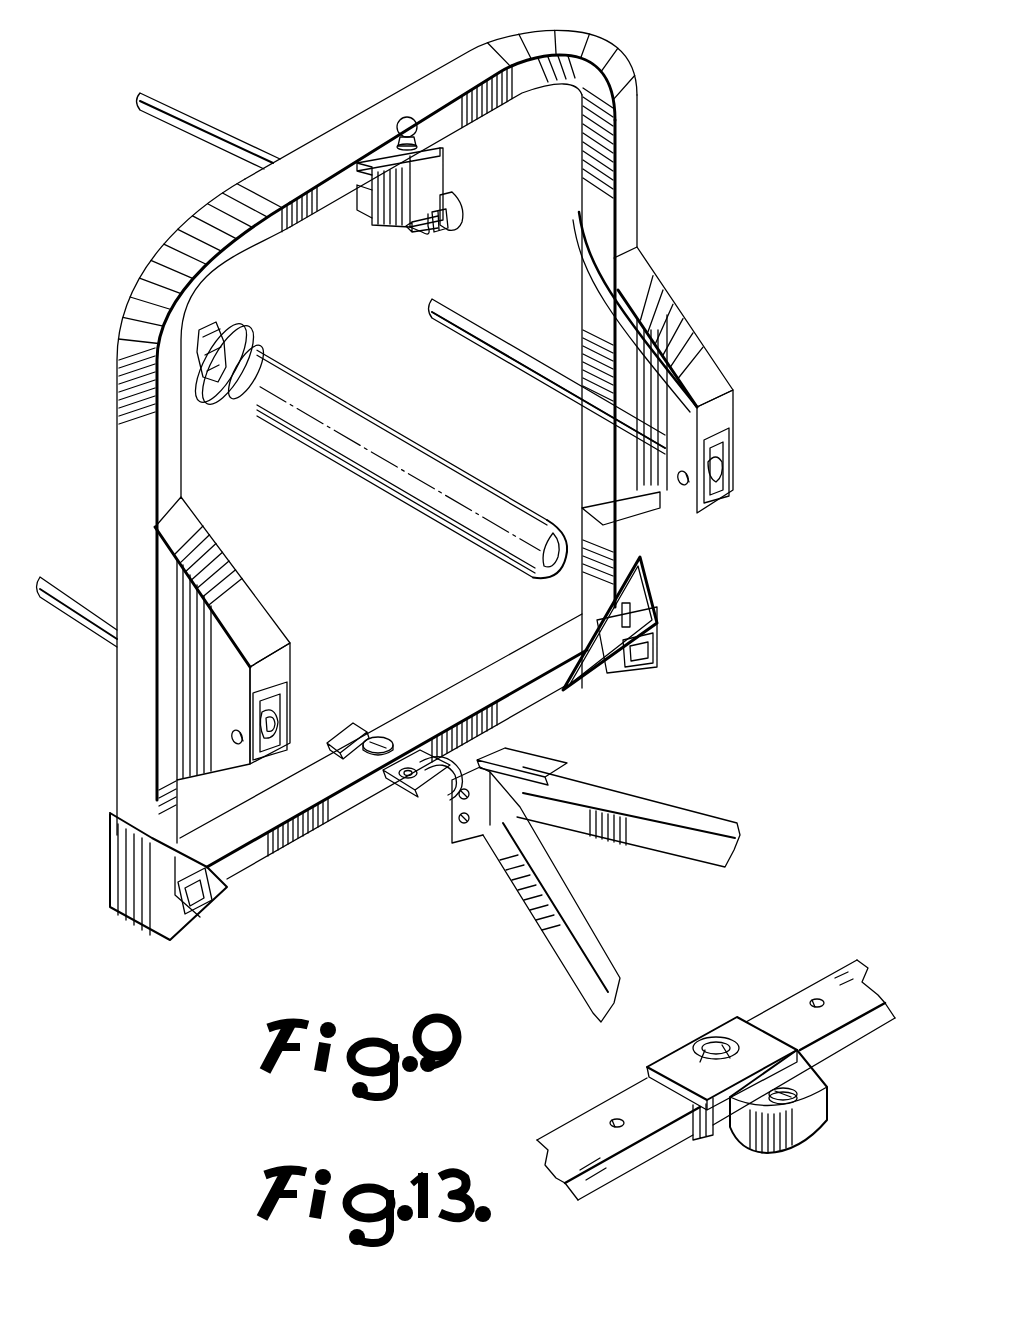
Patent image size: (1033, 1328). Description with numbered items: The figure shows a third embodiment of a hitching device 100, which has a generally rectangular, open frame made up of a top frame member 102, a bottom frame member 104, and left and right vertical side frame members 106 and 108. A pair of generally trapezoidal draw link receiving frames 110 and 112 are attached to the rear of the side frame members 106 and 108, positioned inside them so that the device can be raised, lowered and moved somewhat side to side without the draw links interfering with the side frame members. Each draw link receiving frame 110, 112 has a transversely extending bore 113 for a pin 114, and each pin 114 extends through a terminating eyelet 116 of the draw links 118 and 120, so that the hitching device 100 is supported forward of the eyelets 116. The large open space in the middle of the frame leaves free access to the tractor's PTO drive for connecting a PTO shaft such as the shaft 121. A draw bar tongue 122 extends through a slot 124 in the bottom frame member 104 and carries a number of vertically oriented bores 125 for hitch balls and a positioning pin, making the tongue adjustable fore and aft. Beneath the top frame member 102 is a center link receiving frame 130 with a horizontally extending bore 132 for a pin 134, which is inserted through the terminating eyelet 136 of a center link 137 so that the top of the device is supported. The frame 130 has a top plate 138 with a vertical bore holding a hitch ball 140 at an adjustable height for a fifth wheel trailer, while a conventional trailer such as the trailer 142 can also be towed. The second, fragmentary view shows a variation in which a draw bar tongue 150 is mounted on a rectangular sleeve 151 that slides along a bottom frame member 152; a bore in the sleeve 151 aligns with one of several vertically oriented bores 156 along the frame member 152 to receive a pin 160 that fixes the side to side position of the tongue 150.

In FIG. 9, the hitching device 100 is at (698, 233).
In FIG. 9, the top frame member 102 is at (443, 75).
In FIG. 9, the bottom frame member 104 is at (433, 707).
In FIG. 9, the left vertical side frame member 106 is at (133, 703).
In FIG. 9, the right vertical side frame member 108 is at (623, 137).
In FIG. 9, the draw link receiving frame 110 is at (227, 590).
In FIG. 9, the draw link receiving frame 112 is at (673, 327).
In FIG. 9, the transversely extending bore 113 is at (233, 737).
In FIG. 9, the pin 114 is at (680, 483).
In FIG. 9, the terminating eyelet 116 is at (250, 765).
In FIG. 9, the draw link 118 is at (62, 587).
In FIG. 9, the draw link 120 is at (507, 347).
In FIG. 9, the PTO shaft 121 is at (380, 447).
In FIG. 9, the draw bar tongue 122 is at (330, 737).
In FIG. 9, the slot 124 is at (383, 782).
In FIG. 9, the vertically oriented bore 125 is at (405, 800).
In FIG. 9, the center link receiving frame 130 is at (367, 201).
In FIG. 9, the horizontally extending bore 132 is at (460, 222).
In FIG. 9, the pin 134 is at (410, 235).
In FIG. 9, the terminating eyelet 136 is at (443, 226).
In FIG. 9, the center link 137 is at (225, 132).
In FIG. 9, the top plate 138 is at (372, 157).
In FIG. 9, the hitch ball 140 is at (404, 117).
In FIG. 9, the trailer 142 is at (680, 837).
In FIG. 13, the draw bar tongue 150 is at (827, 1093).
In FIG. 13, the rectangular sleeve 151 is at (647, 1070).
In FIG. 13, the bottom frame member 152 is at (573, 1122).
In FIG. 13, the vertically oriented bores 156 is at (803, 1000).
In FIG. 13, the pin 160 is at (710, 1030).